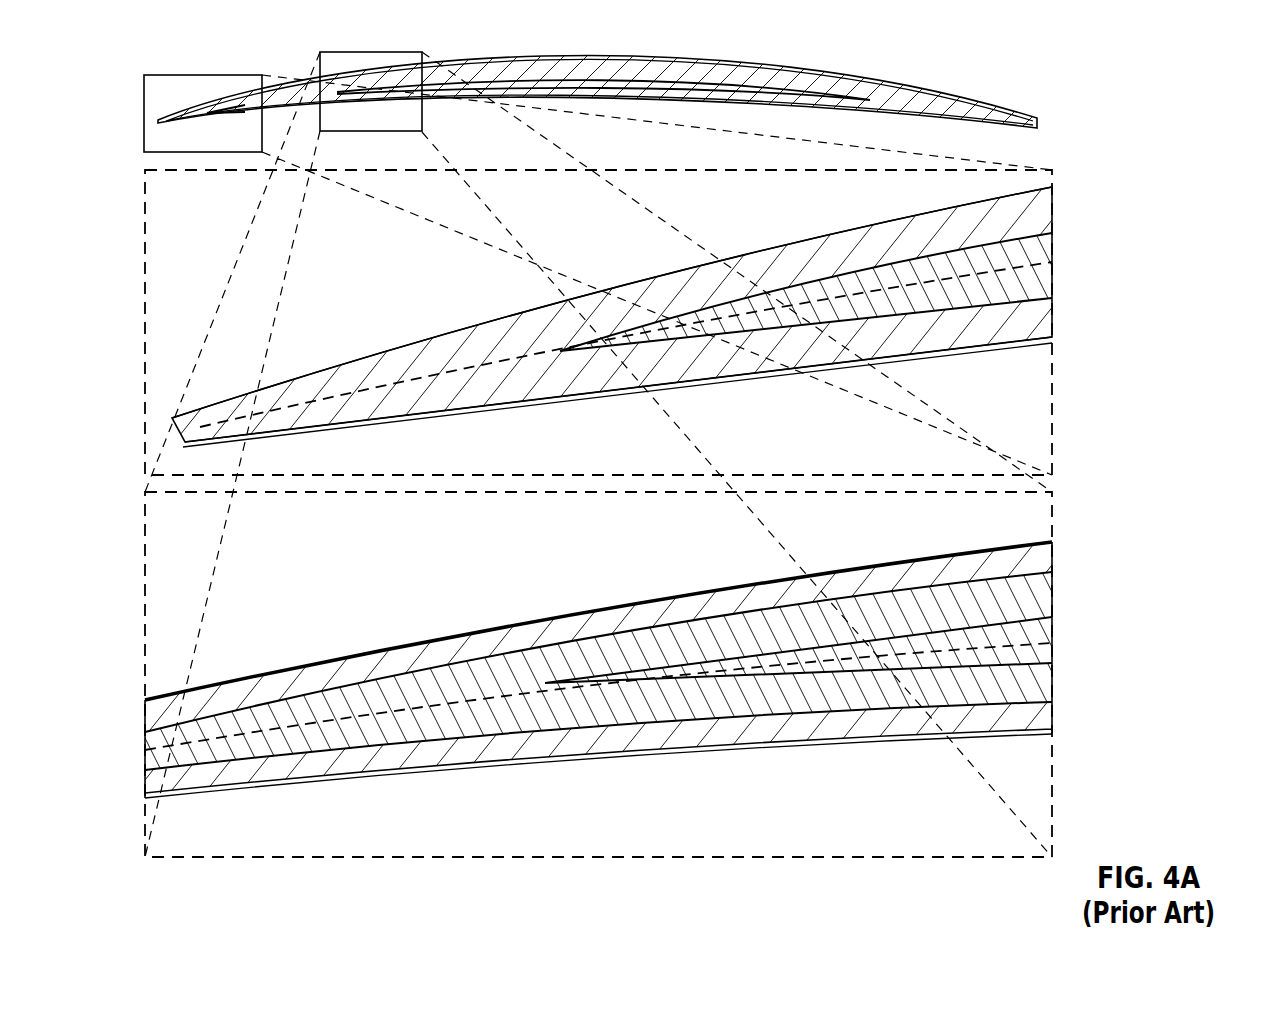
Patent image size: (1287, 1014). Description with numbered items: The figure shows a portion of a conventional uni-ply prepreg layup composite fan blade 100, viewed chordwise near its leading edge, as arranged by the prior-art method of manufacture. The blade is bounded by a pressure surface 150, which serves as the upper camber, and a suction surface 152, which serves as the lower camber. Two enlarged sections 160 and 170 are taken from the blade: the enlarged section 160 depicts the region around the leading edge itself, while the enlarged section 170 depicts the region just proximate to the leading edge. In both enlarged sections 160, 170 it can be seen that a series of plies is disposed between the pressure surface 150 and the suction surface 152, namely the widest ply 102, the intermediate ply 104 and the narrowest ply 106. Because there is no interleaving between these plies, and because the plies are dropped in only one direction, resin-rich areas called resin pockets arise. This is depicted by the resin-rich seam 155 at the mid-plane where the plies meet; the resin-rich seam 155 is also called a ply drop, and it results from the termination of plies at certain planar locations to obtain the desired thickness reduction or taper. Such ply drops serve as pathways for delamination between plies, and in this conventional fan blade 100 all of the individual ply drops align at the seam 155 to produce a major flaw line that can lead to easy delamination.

The fan blade 100 is at (660, 256).
The widest ply 102 is at (788, 262).
The intermediate ply 104 is at (1040, 250).
The narrowest ply 106 is at (958, 640).
The pressure surface 150 is at (418, 350).
The suction surface 152 is at (500, 405).
The resin-rich seam 155 is at (930, 280).
The enlarged section 160 is at (202, 62).
The enlarged section 170 is at (368, 40).